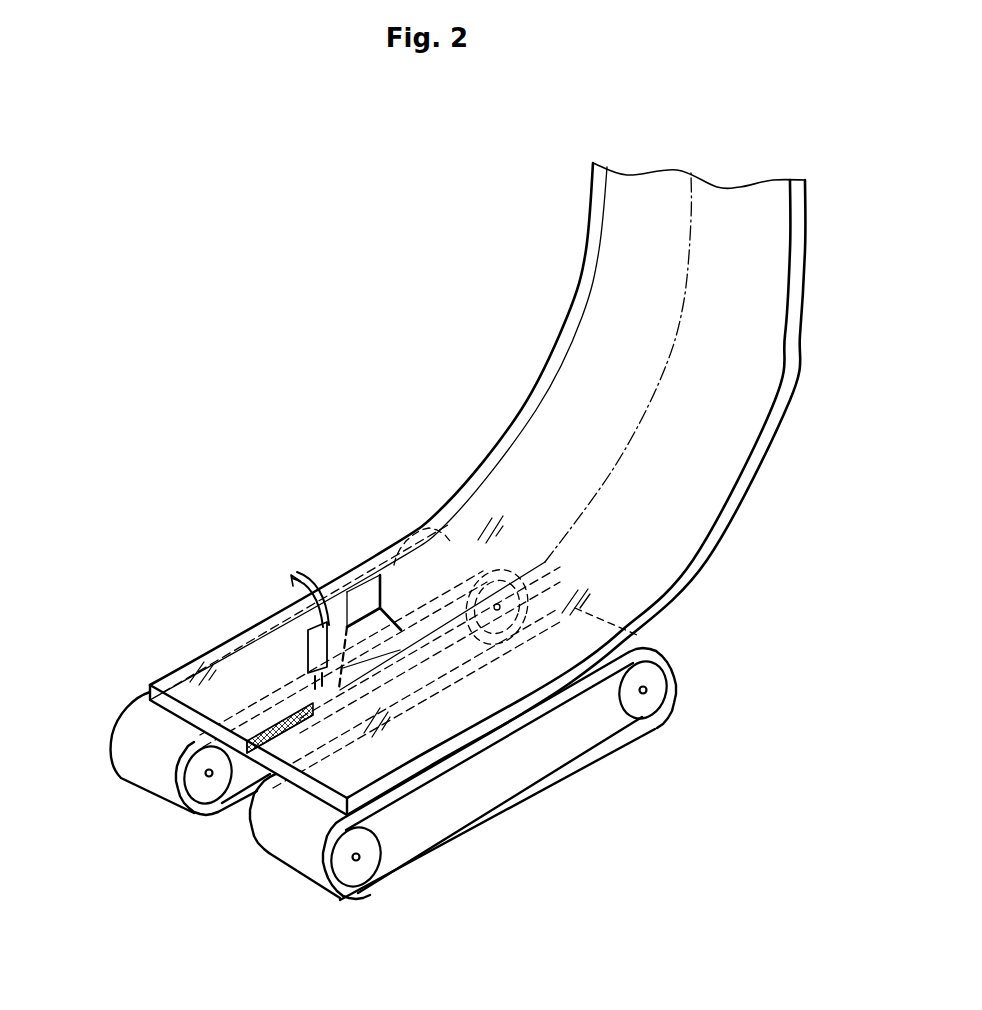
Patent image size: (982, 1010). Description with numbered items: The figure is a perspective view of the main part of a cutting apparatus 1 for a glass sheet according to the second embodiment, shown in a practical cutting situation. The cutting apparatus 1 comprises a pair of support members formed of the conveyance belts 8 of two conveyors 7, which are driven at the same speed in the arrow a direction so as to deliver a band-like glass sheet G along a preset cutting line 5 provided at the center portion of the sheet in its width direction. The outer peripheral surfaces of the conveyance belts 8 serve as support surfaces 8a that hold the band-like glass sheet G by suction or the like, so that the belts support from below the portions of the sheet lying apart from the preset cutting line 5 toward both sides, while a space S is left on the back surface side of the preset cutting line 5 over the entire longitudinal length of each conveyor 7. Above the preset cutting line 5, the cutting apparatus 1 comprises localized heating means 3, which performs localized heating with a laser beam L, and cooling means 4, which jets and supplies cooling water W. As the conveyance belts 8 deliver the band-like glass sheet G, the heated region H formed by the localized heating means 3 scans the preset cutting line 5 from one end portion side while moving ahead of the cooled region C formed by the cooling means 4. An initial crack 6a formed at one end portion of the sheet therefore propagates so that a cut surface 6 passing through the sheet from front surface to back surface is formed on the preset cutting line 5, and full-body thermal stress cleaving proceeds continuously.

The cutting apparatus 1 is at (243, 503).
The localized heating means 3 is at (367, 582).
The cooling means 4 is at (327, 623).
The preset cutting line 5 is at (583, 503).
The cut surface 6 is at (297, 712).
The initial crack 6a is at (256, 720).
The conveyor 7 is at (224, 772).
The conveyance belt 8 is at (128, 737).
The support surface 8a is at (140, 695).
The band-like glass sheet G is at (507, 482).
The laser beam L is at (414, 647).
The cooling water W is at (315, 688).
The cooled region C is at (323, 698).
The heated region H is at (383, 672).
The space S is at (252, 805).
The arrow direction a is at (160, 720).